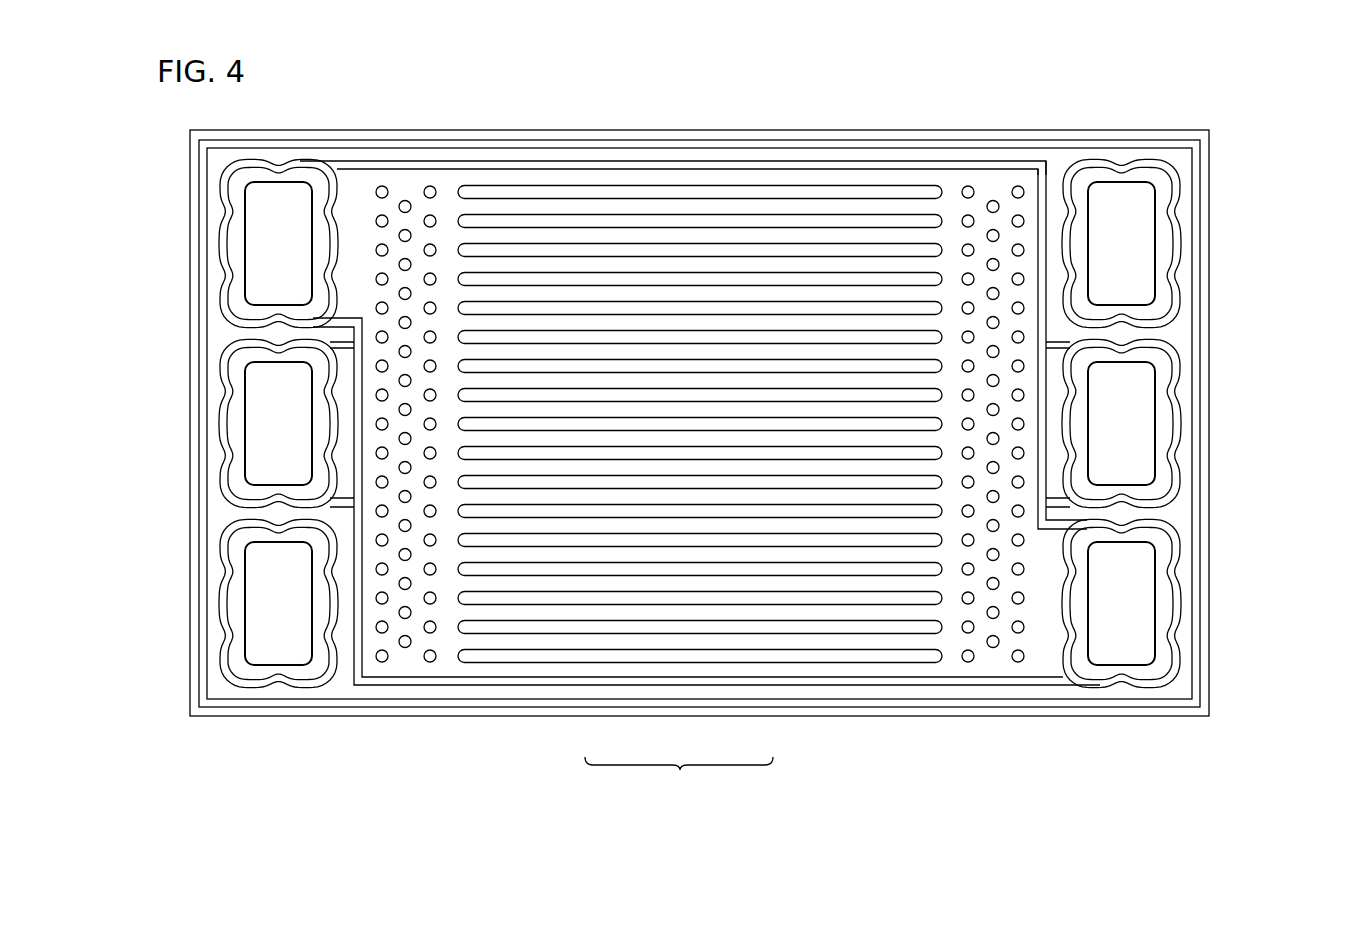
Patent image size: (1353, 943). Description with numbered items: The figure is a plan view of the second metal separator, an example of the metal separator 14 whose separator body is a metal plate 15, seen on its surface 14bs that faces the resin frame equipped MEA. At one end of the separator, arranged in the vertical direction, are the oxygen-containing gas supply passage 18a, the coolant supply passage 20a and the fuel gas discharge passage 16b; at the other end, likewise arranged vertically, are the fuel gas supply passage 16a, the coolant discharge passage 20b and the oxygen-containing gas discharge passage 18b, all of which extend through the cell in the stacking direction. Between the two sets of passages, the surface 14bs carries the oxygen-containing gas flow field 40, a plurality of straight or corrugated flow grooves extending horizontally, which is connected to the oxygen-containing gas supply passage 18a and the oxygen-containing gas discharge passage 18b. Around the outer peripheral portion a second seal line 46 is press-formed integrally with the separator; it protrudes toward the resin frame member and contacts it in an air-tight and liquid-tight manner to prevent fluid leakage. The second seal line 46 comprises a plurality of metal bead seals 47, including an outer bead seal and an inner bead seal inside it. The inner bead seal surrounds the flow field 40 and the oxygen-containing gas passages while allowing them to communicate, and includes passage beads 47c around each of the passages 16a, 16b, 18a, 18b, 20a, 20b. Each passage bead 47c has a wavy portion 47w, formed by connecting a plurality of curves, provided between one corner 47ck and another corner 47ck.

The metal separator 14 is at (869, 79).
The surface 14bs is at (952, 652).
The metal plate 15 is at (1055, 170).
The fuel gas supply passage 16a is at (1137, 243).
The fuel gas discharge passage 16b is at (262, 603).
The oxygen-containing gas supply passage 18a is at (262, 237).
The oxygen-containing gas discharge passage 18b is at (1137, 625).
The coolant supply passage 20a is at (262, 410).
The coolant discharge passage 20b is at (1137, 437).
The oxygen-containing gas flow field 40 is at (568, 208).
The second seal line 46 is at (679, 775).
The bead seal 47 is at (612, 682).
The passage bead 47c is at (228, 207).
The corner 47ck is at (237, 172).
The wavy portion 47w is at (223, 280).